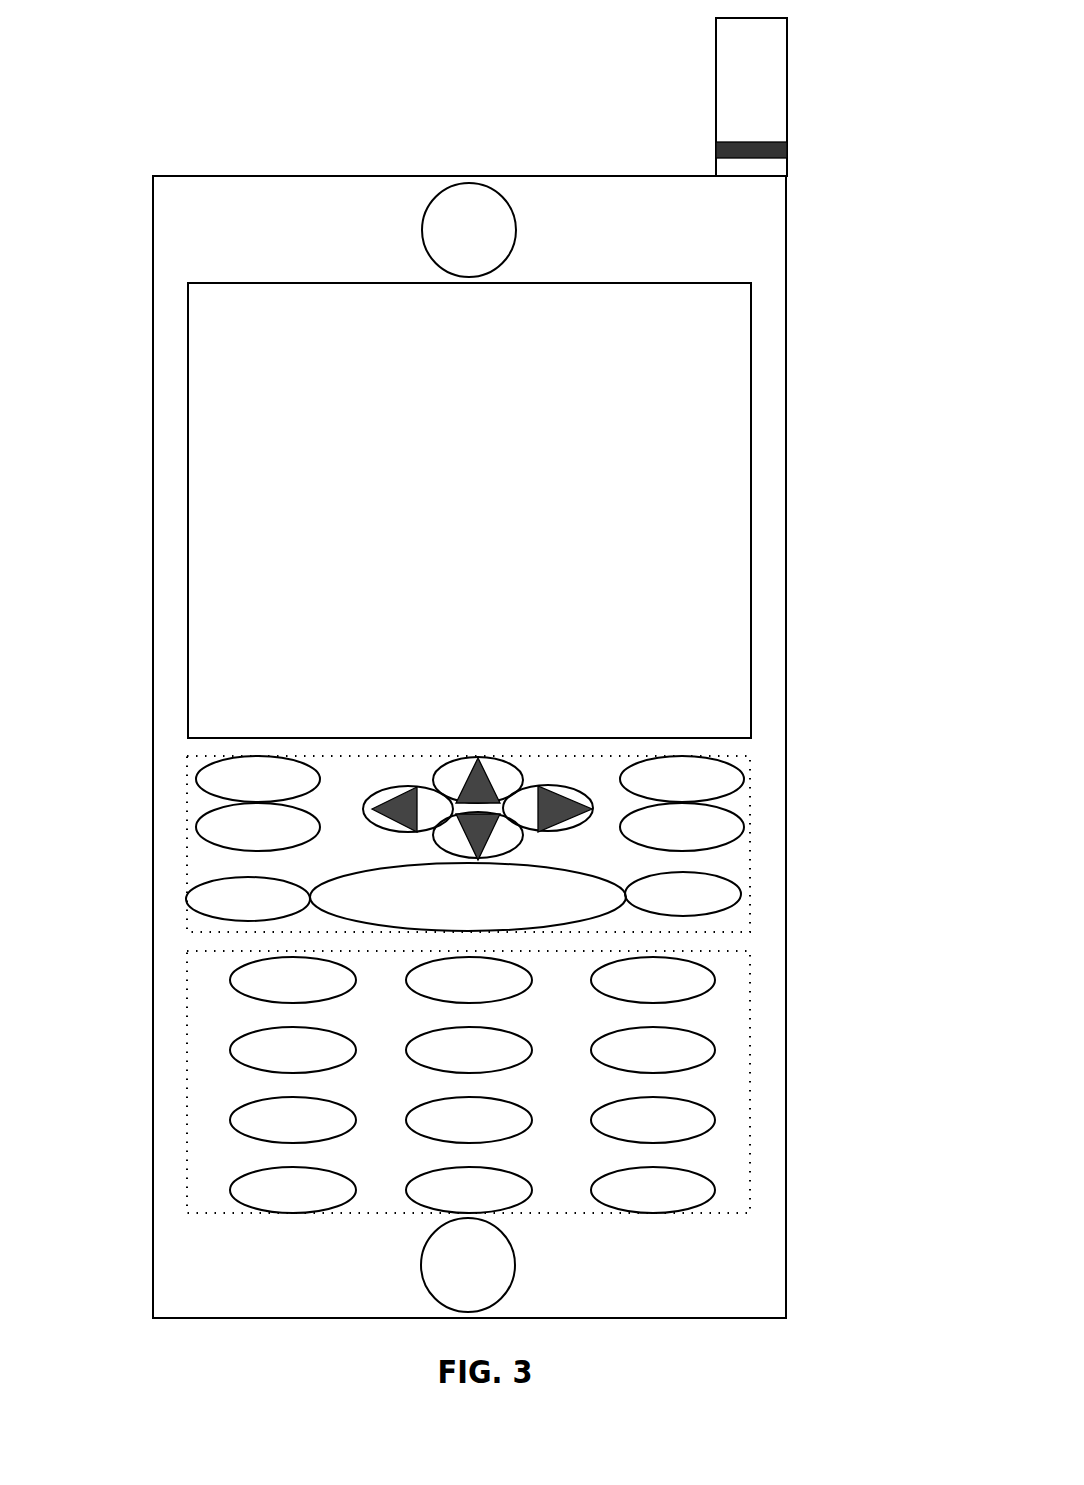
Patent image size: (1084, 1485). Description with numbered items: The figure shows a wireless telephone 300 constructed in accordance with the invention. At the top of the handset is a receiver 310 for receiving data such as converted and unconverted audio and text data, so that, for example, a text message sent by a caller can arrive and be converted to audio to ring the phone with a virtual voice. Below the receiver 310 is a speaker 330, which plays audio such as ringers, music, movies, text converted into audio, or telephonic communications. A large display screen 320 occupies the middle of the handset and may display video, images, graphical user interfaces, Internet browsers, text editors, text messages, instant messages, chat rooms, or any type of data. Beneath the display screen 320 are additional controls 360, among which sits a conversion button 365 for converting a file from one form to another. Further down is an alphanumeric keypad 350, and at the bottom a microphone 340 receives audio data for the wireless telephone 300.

The wireless telephone 300 is at (515, 50).
The receiver 310 is at (750, 98).
The display screen 320 is at (752, 511).
The speaker 330 is at (515, 212).
The microphone 340 is at (515, 1260).
The alphanumeric keypad 350 is at (750, 1083).
The additional controls 360 is at (517, 844).
The conversion button 365 is at (535, 878).